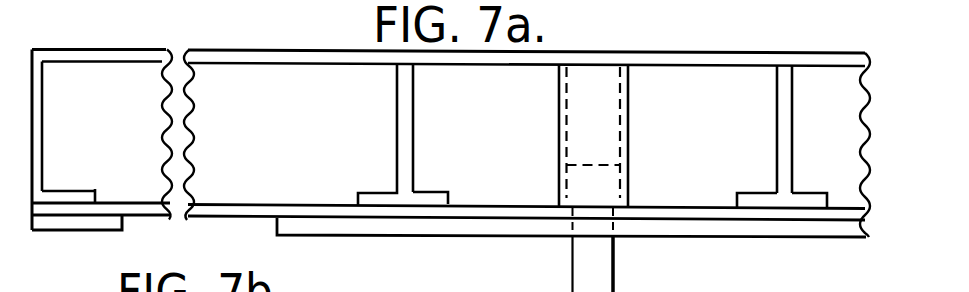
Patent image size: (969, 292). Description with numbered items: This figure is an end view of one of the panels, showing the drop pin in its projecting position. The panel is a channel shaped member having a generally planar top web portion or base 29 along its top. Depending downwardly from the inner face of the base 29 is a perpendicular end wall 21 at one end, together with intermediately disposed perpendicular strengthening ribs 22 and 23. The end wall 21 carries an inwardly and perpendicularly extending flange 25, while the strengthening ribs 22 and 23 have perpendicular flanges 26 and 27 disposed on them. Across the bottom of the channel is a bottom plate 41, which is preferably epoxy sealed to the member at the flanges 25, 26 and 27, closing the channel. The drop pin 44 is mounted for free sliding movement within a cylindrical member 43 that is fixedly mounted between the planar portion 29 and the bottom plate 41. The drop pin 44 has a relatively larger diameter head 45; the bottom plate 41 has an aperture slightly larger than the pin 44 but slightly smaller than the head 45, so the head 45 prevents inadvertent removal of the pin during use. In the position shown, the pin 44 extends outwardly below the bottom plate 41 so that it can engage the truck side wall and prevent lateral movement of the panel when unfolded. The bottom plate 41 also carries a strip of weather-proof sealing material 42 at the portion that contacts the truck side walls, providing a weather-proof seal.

The end wall 21 is at (38, 113).
The strengthening rib 22 is at (405, 97).
The strengthening rib 23 is at (785, 132).
The flange 25 is at (68, 197).
The flange 26 is at (432, 200).
The flange 27 is at (808, 200).
The planar top web portion 29 is at (747, 60).
The bottom plate 41 is at (865, 219).
The strip of weather-proof sealing material 42 is at (672, 230).
The cylindrical member 43 is at (629, 125).
The drop pin 44 is at (582, 282).
The head 45 is at (608, 180).